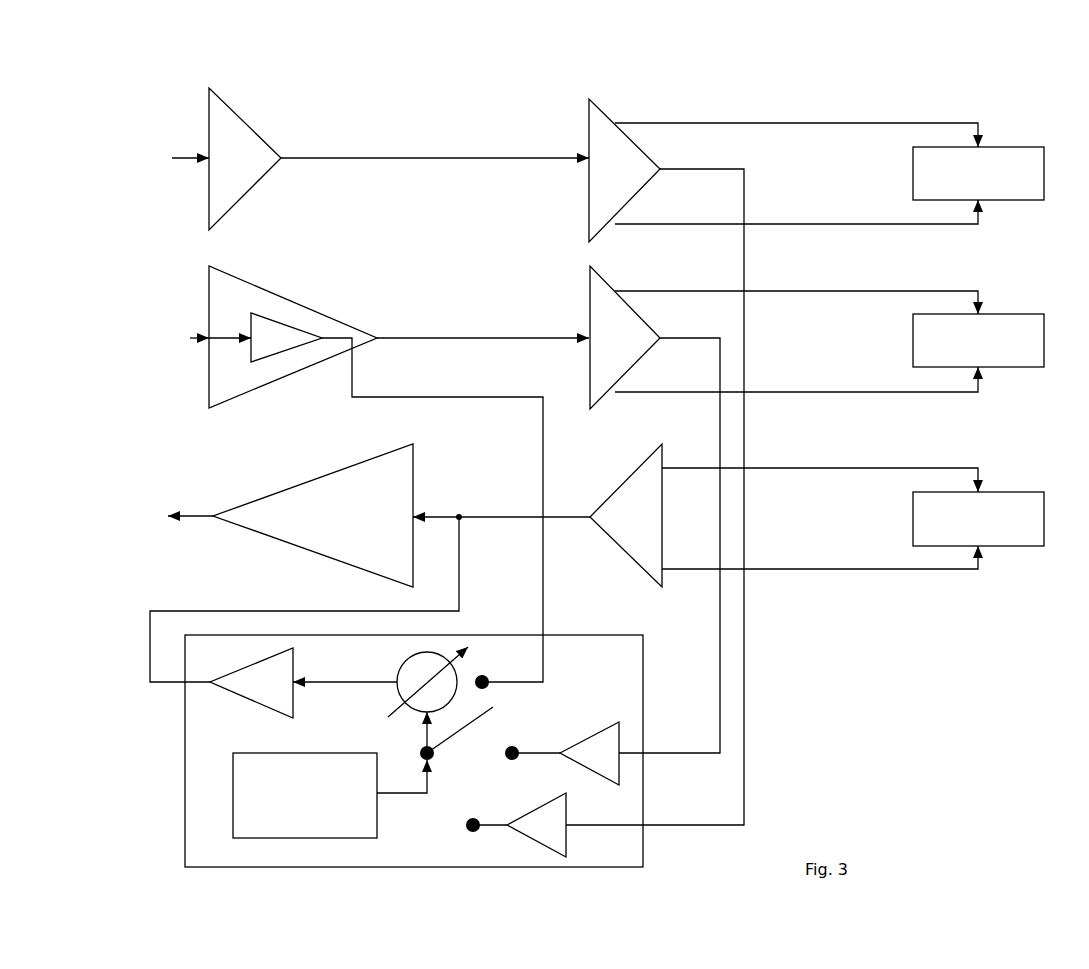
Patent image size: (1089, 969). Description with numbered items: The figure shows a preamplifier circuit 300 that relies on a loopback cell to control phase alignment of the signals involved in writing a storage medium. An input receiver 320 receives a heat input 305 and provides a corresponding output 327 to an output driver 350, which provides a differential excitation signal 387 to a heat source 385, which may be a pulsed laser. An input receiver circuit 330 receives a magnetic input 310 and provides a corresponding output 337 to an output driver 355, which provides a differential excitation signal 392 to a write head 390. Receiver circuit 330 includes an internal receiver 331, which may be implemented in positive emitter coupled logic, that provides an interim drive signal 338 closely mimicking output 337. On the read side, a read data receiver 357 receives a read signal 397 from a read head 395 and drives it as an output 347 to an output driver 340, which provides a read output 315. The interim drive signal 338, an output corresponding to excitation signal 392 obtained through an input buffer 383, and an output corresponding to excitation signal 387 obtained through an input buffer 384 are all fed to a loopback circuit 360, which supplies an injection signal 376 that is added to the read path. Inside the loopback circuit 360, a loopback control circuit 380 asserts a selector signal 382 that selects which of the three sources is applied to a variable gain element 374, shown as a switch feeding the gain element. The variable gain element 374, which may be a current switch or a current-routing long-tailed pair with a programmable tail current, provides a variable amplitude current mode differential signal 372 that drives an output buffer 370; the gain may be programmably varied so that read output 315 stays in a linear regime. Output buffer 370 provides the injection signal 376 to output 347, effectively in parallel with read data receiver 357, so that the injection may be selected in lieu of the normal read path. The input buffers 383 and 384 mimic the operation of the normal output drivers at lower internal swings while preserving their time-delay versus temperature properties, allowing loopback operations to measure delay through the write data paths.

The preamplifier circuit 300 is at (300, 74).
The heat input 305 is at (108, 148).
The magnetic input 310 is at (95, 334).
The read output 315 is at (100, 498).
The input receiver 320 is at (245, 159).
The output 327 is at (338, 158).
The input receiver circuit 330 is at (293, 337).
The internal receiver 331 is at (286, 337).
The output 337 is at (469, 338).
The interim drive signal 338 is at (353, 370).
The output driver 340 is at (313, 515).
The output 347 is at (483, 517).
The output driver 350 is at (624, 170).
The output driver 355 is at (625, 337).
The read data receiver 357 is at (626, 515).
The loopback circuit 360 is at (414, 751).
The output buffer 370 is at (251, 683).
The variable amplitude current mode differential signal 372 is at (339, 688).
The variable gain element 374 is at (402, 667).
The injection signal 376 is at (318, 611).
The loopback control circuit 380 is at (305, 795).
The selector signal 382 is at (412, 795).
The input buffer 383 is at (612, 561).
The input buffer 384 is at (605, 513).
The heat source 385 is at (978, 173).
The differential excitation signal 387 is at (838, 122).
The write head 390 is at (978, 340).
The differential excitation signal 392 is at (835, 291).
The read head 395 is at (978, 519).
The read signal 397 is at (845, 468).